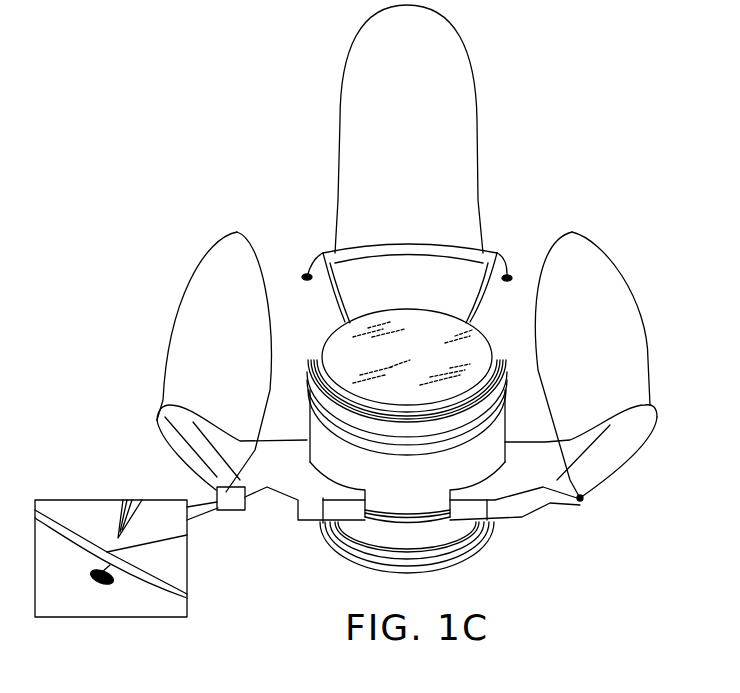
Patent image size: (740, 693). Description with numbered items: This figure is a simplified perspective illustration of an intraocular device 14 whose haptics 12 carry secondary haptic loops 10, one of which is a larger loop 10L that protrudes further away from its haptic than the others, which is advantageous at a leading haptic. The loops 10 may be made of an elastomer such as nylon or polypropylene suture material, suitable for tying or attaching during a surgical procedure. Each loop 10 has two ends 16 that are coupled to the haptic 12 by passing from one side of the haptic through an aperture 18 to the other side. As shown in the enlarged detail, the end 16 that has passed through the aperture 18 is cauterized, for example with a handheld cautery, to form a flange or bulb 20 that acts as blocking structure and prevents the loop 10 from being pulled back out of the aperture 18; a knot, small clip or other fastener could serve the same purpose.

The larger loop 10L is at (473, 88).
The secondary haptic loop 10 is at (198, 253).
The haptic 12 is at (362, 272).
The intraocular device 14 is at (420, 474).
The loop end 16 is at (132, 510).
The aperture 18 is at (118, 537).
The flange or bulb 20 is at (97, 585).